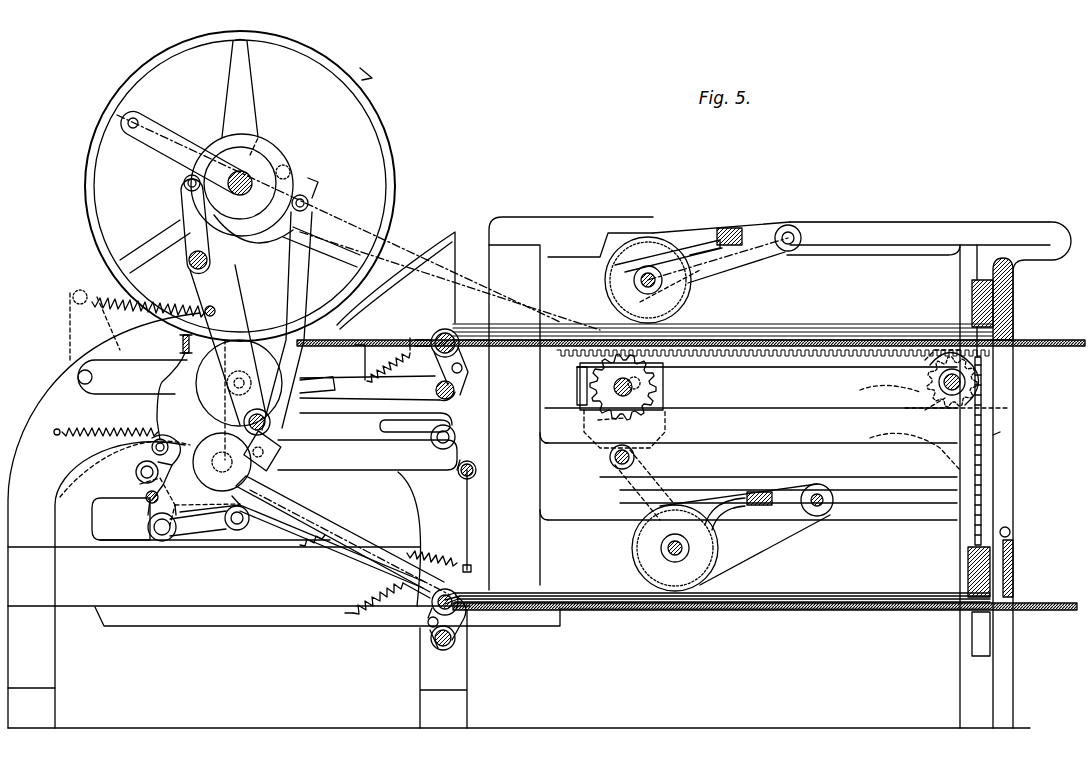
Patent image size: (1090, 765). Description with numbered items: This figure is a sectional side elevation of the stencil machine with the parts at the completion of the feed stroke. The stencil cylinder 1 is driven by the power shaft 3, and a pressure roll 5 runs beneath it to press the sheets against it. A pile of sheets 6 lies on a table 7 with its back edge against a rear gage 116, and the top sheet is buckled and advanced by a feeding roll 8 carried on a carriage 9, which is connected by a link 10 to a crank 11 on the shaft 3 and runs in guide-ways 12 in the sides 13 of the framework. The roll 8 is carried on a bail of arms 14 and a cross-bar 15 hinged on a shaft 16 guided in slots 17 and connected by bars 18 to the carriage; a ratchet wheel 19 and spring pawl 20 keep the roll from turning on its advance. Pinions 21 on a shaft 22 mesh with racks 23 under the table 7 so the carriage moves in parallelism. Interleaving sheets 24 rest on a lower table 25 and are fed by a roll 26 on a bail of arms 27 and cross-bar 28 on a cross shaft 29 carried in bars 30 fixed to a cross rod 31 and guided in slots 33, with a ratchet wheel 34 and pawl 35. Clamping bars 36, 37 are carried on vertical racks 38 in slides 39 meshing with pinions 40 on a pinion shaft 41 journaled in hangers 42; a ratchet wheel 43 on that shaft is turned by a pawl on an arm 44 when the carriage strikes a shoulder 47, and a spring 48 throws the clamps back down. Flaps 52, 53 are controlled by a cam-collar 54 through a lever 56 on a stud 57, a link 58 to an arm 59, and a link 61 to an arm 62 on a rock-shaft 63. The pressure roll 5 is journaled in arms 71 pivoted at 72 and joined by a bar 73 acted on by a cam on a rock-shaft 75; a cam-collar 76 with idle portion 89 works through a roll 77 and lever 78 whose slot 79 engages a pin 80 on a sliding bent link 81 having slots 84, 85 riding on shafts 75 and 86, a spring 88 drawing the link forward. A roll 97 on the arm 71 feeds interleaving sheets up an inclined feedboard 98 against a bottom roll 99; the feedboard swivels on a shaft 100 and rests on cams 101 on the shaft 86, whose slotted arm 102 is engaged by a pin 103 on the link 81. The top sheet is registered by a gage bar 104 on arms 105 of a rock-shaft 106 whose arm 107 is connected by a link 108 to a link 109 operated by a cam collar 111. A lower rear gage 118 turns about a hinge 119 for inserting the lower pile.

The stencil cylinder 1 is at (392, 148).
The power shaft 3 is at (252, 184).
The pressure roll 5 is at (210, 402).
The pile of sheets 6 is at (832, 335).
The table 7 is at (522, 343).
The buckling and feeding roll 8 is at (636, 290).
The carriage 9 is at (585, 408).
The link 10 is at (435, 252).
The crank 11 is at (138, 152).
The guide-ways 12 is at (767, 383).
The sides of the framework 13 is at (572, 235).
The arms 14 is at (715, 228).
The cross-bar 15 is at (735, 228).
The shaft 16 is at (795, 228).
The horizontal slots 17 is at (918, 224).
The bars 18 is at (738, 270).
The ratchet wheel 19 is at (605, 275).
The spring pawl 20 is at (668, 251).
The pinions 21 is at (628, 415).
The revoluble shaft 22 is at (660, 390).
The racks 23 is at (800, 358).
The pile of interleaving sheets 24 is at (770, 600).
The table 25 is at (692, 606).
The roll 26 is at (716, 560).
The arms 27 is at (718, 490).
The cross-bar 28 is at (773, 498).
The cross shaft 29 is at (820, 514).
The bars 30 is at (645, 485).
The cross rod 31 is at (608, 458).
The guide slots 33 is at (925, 505).
The ratchet wheel 34 is at (634, 546).
The pawl 35 is at (715, 528).
The clamping bar 36 is at (970, 302).
The clamping bar 37 is at (968, 572).
The vertical racks 38 is at (995, 496).
The slides 39 is at (1000, 433).
The pinions 40 is at (927, 383).
The pinion shaft 41 is at (960, 440).
The hangers 42 is at (935, 358).
The ratchet wheel 43 is at (973, 405).
The arm 44 is at (902, 447).
The shoulder 47 is at (860, 390).
The spring 48 is at (922, 405).
The upper flap 52 is at (425, 338).
The lower flap 53 is at (430, 558).
The cam-collar 54 is at (248, 228).
The lever 56 is at (315, 190).
The stud 57 is at (208, 262).
The link 58 is at (328, 377).
The arm 59 is at (457, 371).
The link 61 is at (340, 528).
The arm 62 is at (458, 625).
The rock-shaft 63 is at (458, 594).
The arms 71 is at (132, 377).
The pivot 72 is at (78, 383).
The transverse horizontal bar 73 is at (456, 394).
The rock-shaft 75 is at (436, 447).
The cam-collar 76 is at (270, 165).
The roll 77 is at (183, 184).
The lever 78 is at (221, 302).
The slot 79 is at (275, 468).
The pin 80 is at (268, 432).
The bent bar or link 81 is at (367, 455).
The slot 84 is at (378, 427).
The slot 85 is at (92, 522).
The rock shaft 86 is at (162, 541).
The spring 88 is at (85, 290).
The idle portion 89 is at (225, 145).
The roll 97 is at (200, 460).
The inclined feedboard 98 is at (320, 540).
The bottom roll 99 is at (247, 526).
The horizontal shaft 100 is at (432, 640).
The cams 101 is at (135, 498).
The slotted arm 102 is at (138, 471).
The pin 103 is at (205, 519).
The gage bar 104 is at (182, 343).
The arms 105 is at (156, 408).
The rock-shaft 106 is at (150, 448).
The arm 107 is at (150, 452).
The link 108 is at (372, 411).
The link 109 is at (285, 321).
The cam collar 111 is at (255, 150).
The rear gage 116 is at (1014, 306).
The rear gage 118 is at (1013, 568).
The hinge 119 is at (1010, 532).